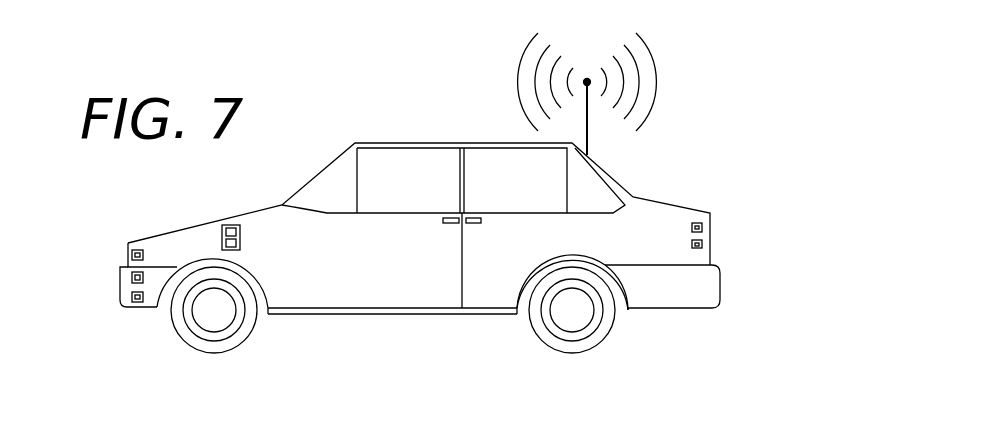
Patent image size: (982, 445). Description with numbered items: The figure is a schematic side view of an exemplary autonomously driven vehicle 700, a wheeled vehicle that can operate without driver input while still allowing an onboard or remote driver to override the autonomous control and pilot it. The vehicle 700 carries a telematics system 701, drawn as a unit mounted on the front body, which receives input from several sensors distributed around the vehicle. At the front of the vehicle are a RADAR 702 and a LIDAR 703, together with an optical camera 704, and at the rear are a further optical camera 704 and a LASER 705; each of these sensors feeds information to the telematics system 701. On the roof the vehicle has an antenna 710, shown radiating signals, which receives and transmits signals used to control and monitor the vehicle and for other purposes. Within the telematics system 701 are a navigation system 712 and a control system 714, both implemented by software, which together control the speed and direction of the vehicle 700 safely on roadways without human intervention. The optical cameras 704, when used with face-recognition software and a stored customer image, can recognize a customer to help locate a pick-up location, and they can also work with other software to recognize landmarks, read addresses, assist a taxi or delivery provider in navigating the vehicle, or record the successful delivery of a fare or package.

The autonomously driven vehicle 700 is at (380, 112).
The telematics system 701 is at (222, 240).
The RADAR 702 is at (133, 298).
The LIDAR 703 is at (130, 277).
The optical camera 704 is at (130, 257).
The LASER 705 is at (703, 245).
The antenna 710 is at (588, 127).
The navigation system 712 is at (242, 230).
The control system 714 is at (242, 243).